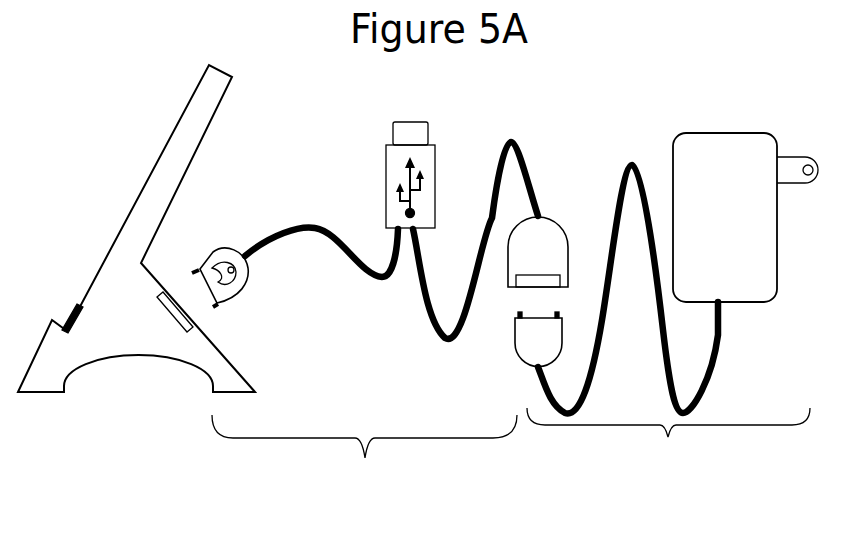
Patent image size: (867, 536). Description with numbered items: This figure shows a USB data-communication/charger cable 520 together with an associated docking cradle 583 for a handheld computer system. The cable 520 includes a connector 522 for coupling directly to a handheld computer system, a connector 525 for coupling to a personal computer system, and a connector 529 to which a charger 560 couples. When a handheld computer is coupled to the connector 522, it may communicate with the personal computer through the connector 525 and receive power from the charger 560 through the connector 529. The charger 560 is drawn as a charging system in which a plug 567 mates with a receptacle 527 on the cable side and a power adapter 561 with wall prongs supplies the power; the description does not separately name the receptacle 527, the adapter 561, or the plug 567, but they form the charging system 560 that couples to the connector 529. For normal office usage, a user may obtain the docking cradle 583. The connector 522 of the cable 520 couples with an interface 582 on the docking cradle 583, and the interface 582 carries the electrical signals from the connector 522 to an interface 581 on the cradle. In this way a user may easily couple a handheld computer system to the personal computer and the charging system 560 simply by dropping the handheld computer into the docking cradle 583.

The USB data-communication/charger cable 520 is at (387, 302).
The connector 522 is at (248, 297).
The connector 525 is at (385, 160).
The USB receptacle connector 527 is at (557, 217).
The connector 529 is at (540, 282).
The charger 560 is at (666, 298).
The power adapter 561 is at (745, 217).
The power cable plug 567 is at (538, 339).
The interface 581 is at (72, 310).
The interface 582 is at (175, 311).
The docking cradle 583 is at (128, 217).